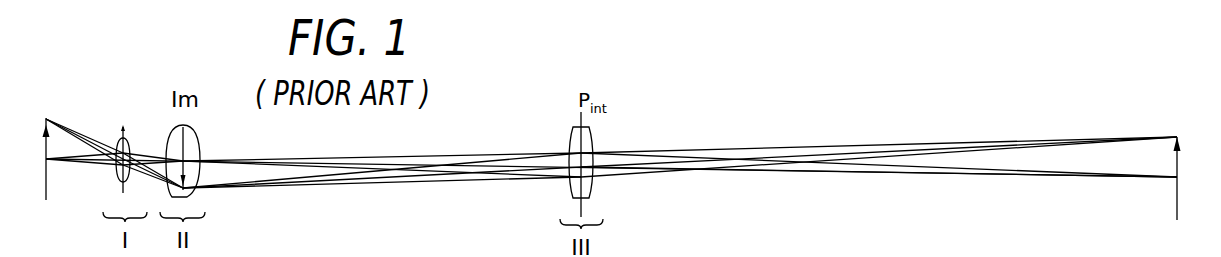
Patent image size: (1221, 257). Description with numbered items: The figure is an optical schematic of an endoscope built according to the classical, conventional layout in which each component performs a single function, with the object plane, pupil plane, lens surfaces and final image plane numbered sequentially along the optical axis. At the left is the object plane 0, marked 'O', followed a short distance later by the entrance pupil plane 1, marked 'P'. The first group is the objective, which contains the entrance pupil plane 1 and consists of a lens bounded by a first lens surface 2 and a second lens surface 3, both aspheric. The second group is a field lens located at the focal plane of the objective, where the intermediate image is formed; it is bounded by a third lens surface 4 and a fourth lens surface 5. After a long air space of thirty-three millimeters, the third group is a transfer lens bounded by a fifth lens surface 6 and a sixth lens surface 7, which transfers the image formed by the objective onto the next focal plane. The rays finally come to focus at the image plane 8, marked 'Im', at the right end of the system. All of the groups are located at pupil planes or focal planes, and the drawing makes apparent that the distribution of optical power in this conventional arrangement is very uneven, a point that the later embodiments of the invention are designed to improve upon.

The object plane 0 is at (57, 144).
The entrance pupil plane 1 is at (134, 150).
The first lens surface 2 is at (109, 162).
The second lens surface 3 is at (134, 156).
The third lens surface 4 is at (169, 159).
The fourth lens surface 5 is at (198, 159).
The fifth lens surface 6 is at (568, 160).
The sixth lens surface 7 is at (595, 160).
The image plane 8 is at (1176, 163).